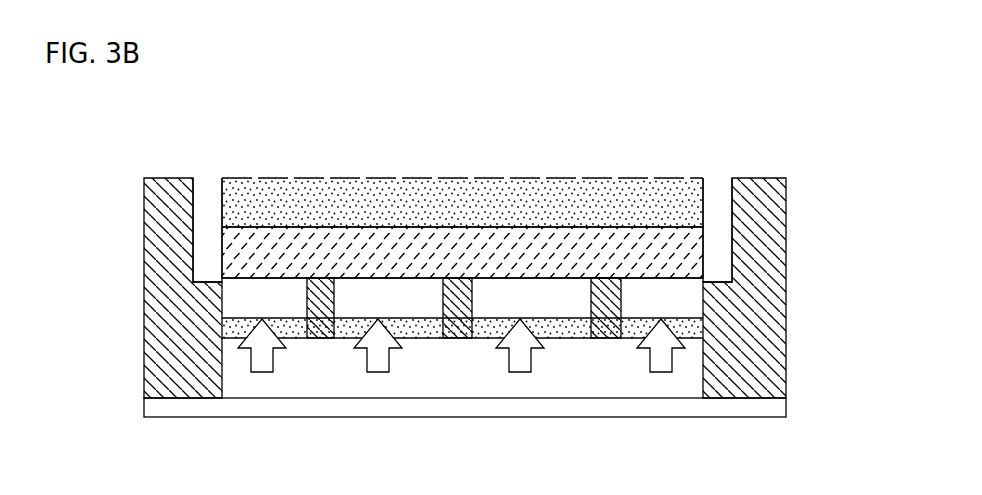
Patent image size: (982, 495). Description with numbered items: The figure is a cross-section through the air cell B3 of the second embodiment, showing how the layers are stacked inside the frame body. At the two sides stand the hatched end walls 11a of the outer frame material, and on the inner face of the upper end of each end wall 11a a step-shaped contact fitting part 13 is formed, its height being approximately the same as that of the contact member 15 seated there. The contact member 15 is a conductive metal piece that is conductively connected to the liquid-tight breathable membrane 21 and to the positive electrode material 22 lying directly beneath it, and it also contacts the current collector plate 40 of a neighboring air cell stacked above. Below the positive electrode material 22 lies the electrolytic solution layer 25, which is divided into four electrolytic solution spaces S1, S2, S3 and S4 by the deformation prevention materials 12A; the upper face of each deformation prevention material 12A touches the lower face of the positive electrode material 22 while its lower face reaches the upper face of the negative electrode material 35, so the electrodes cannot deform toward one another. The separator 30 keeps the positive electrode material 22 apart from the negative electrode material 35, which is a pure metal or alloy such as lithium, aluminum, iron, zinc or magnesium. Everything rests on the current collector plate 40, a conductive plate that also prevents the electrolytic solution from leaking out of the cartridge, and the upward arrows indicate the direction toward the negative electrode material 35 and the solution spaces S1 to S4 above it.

The air cell B3 is at (140, 175).
The end wall 11a is at (144, 298).
The contact fitting part 13 is at (197, 184).
The contact member 15 is at (217, 183).
The liquid-tight breathable membrane 21 is at (270, 188).
The positive electrode material 22 is at (224, 256).
The electrolytic solution layer 25 is at (697, 307).
The separator 30 is at (232, 337).
The deformation prevention material 12A is at (322, 330).
The negative electrode material 35 is at (448, 387).
The current collector plate 40 is at (766, 416).
The electrolytic solution space S1 is at (282, 311).
The electrolytic solution space S2 is at (395, 311).
The electrolytic solution space S3 is at (540, 311).
The electrolytic solution space S4 is at (672, 311).